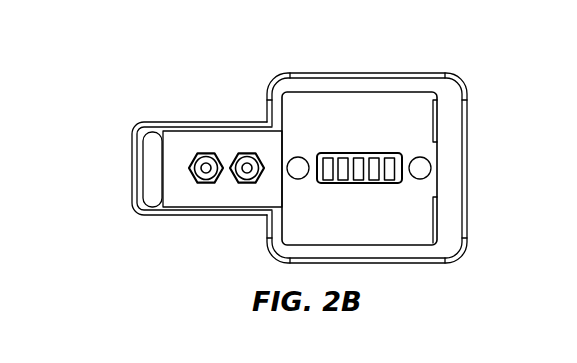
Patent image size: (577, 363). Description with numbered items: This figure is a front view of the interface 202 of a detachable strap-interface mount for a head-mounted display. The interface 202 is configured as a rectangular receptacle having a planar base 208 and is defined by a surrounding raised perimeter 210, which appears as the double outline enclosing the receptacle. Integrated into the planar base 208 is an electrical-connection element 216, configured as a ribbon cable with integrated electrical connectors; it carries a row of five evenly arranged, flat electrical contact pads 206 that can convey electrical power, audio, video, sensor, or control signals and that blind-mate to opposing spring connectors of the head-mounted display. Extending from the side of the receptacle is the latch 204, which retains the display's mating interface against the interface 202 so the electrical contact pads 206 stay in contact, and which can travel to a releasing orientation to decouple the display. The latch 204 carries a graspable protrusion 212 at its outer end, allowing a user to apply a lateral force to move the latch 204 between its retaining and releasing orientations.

The interface 202 is at (413, 247).
The latch 204 is at (182, 217).
The electrical contact pads 206 is at (329, 156).
The planar base 208 is at (343, 220).
The surrounding raised perimeter 210 is at (448, 157).
The graspable protrusion 212 is at (147, 130).
The electrical-connection element 216 is at (352, 168).